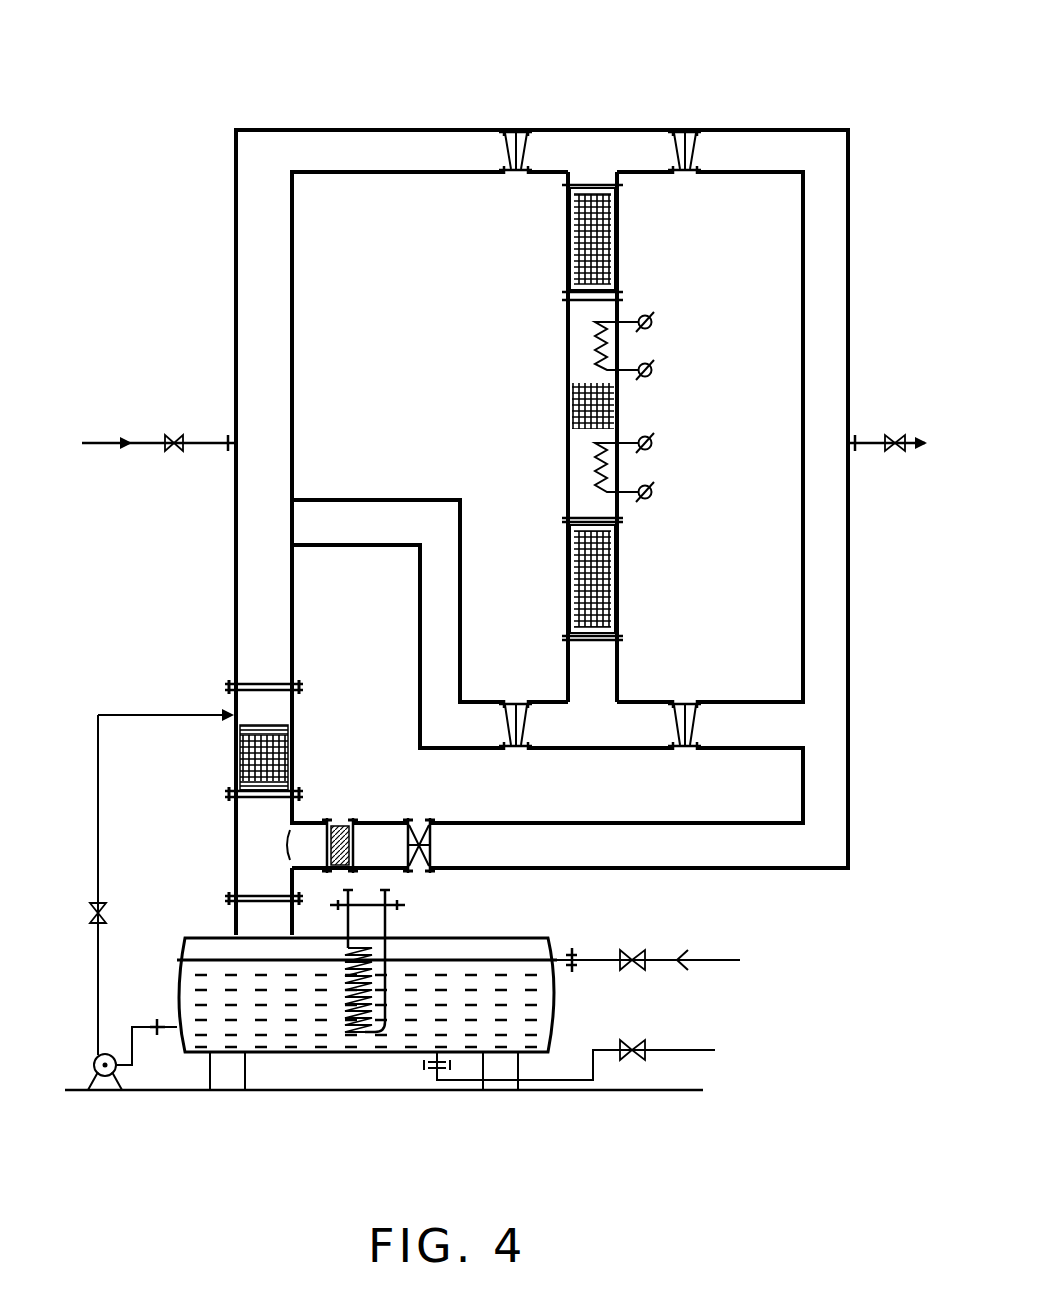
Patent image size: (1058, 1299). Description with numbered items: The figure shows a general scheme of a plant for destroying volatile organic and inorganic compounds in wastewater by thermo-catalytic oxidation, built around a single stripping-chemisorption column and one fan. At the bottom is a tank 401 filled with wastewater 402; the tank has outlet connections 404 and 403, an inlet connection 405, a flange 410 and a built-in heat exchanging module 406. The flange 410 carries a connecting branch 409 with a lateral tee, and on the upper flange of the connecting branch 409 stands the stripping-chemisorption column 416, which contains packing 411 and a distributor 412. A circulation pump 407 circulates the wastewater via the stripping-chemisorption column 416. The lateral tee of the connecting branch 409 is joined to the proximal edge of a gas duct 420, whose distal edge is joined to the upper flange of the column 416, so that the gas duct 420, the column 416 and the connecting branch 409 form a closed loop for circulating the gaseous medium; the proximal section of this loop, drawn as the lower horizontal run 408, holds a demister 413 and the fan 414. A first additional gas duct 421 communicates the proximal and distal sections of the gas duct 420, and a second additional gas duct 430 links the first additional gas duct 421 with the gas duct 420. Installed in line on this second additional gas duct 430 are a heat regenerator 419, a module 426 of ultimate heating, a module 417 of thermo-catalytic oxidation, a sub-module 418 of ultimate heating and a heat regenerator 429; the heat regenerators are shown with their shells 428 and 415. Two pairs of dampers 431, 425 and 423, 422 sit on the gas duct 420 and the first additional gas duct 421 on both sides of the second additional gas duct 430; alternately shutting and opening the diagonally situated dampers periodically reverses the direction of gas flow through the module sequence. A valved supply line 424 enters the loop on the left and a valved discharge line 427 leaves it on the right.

The tank 401 is at (530, 939).
The wastewater 402 is at (260, 1021).
The outlet connection 403 is at (435, 1062).
The outlet connection 404 is at (571, 966).
The inlet connection 405 is at (160, 1022).
The built-in heat exchanging module 406 is at (345, 1050).
The circulation pump 407 is at (108, 1085).
The return duct 408 is at (385, 872).
The connecting branch 409 is at (235, 860).
The flange 410 is at (233, 906).
The packing 411 is at (292, 758).
The distributor 412 is at (256, 726).
The demister 413 is at (355, 826).
The fan 414 is at (412, 824).
The heat exchanger 415 is at (568, 266).
The stripping-chemisorption column 416 is at (236, 778).
The module of thermo-catalytic oxidation 417 is at (572, 421).
The sub-module of ultimate heating 418 is at (655, 371).
The heat regenerator 419 is at (617, 597).
The gas duct 420 is at (848, 713).
The first additional gas duct 421 is at (395, 511).
The damper 422 is at (677, 750).
The damper 423 is at (508, 750).
The inlet line 424 is at (231, 432).
The damper 425 is at (700, 129).
The module of ultimate heating 426 is at (655, 470).
The outlet line 427 is at (856, 441).
The heat exchanger shell 428 is at (568, 581).
The heat regenerator 429 is at (617, 262).
The second additional gas duct 430 is at (617, 681).
The damper 431 is at (504, 128).